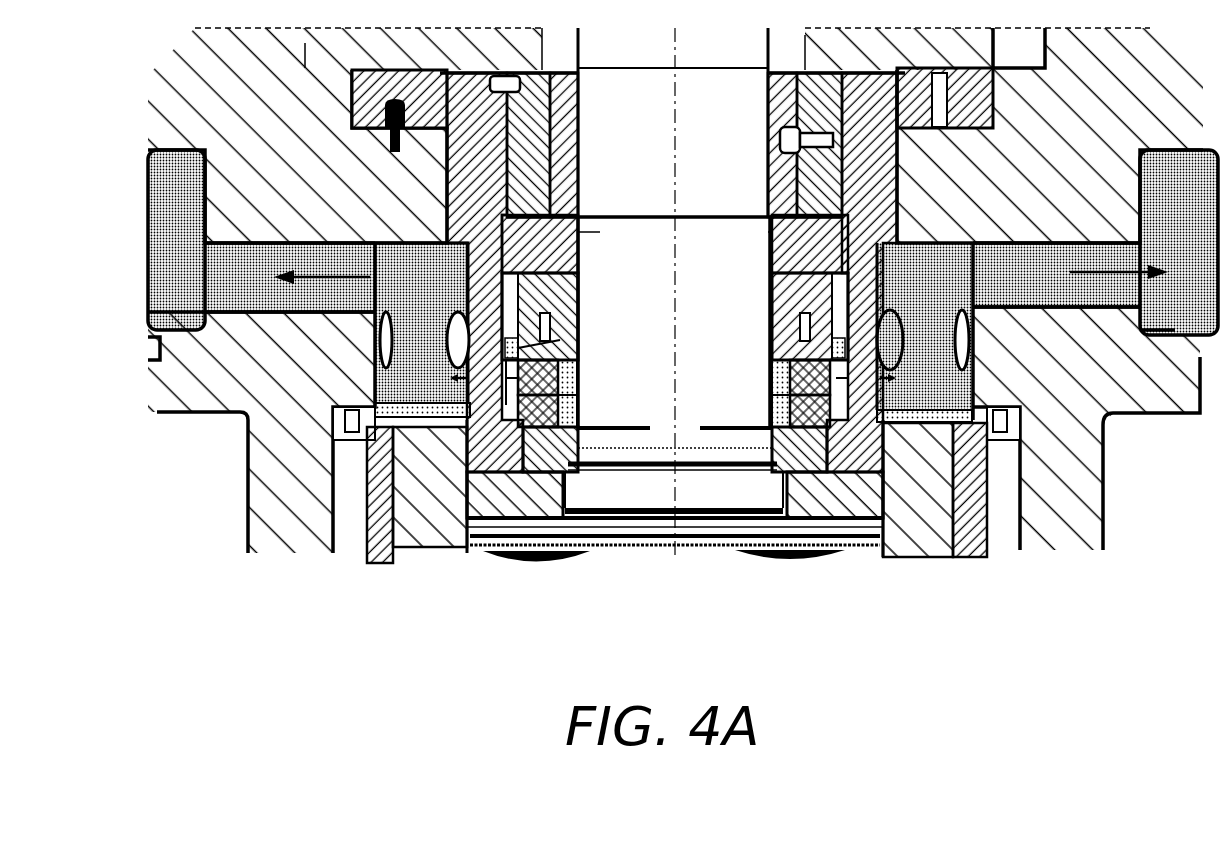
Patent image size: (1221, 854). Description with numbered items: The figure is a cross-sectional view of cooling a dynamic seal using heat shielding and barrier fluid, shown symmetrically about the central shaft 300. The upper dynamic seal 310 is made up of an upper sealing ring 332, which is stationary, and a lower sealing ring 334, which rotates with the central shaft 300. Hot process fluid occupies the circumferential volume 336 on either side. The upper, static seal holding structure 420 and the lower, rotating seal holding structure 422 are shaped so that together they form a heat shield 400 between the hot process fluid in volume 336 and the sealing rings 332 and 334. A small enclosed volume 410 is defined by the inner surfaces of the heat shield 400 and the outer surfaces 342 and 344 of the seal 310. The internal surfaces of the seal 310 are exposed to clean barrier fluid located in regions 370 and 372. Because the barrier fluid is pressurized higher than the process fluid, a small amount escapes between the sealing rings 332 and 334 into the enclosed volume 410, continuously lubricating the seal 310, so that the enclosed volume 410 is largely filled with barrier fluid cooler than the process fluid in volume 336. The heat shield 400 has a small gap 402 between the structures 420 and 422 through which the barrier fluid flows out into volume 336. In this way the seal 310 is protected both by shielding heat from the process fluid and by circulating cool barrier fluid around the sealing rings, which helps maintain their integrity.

The central shaft 300 is at (739, 198).
The upper dynamic seal 310 is at (722, 590).
The upper sealing ring 332 is at (580, 343).
The lower sealing ring 334 is at (772, 414).
The circumferential volume 336 is at (406, 262).
The external surface 342 is at (500, 376).
The external surface 344 is at (465, 432).
The barrier fluid region 370 is at (770, 362).
The barrier fluid region 372 is at (768, 232).
The heat shield 400 is at (965, 395).
The gap 402 is at (880, 320).
The enclosed volume 410 is at (772, 318).
The upper seal holding structure 420 is at (545, 254).
The lower seal holding structure 422 is at (528, 506).